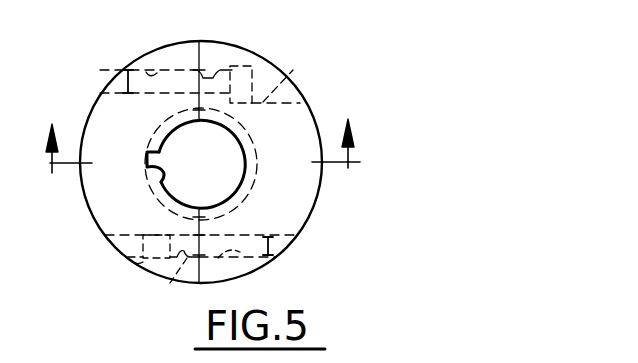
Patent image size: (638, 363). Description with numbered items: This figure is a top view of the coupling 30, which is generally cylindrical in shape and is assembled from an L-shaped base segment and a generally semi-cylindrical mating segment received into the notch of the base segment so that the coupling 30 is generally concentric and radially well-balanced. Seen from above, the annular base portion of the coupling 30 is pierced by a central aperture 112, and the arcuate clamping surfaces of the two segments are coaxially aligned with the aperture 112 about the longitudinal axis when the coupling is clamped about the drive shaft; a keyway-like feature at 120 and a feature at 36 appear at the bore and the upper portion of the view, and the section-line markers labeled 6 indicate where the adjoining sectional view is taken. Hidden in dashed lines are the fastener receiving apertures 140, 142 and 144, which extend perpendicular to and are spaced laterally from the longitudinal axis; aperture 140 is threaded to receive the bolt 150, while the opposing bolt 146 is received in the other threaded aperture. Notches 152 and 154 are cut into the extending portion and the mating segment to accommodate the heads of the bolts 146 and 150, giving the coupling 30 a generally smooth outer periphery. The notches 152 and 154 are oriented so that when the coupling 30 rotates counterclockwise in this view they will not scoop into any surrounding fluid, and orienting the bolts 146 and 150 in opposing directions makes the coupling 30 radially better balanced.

The coupling 30 is at (322, 228).
The section line 6- 6 is at (198, 146).
The upper slot 36 is at (157, 67).
The aperture 112 is at (249, 136).
The keyway 120 is at (154, 184).
The fastener receiving aperture 140 is at (171, 288).
The fastener receiving aperture 142 is at (208, 64).
The fastener receiving aperture 144 is at (265, 279).
The bolt 146 is at (251, 69).
The bolt 150 is at (134, 258).
The notch 152 is at (118, 263).
The notch 154 is at (294, 72).